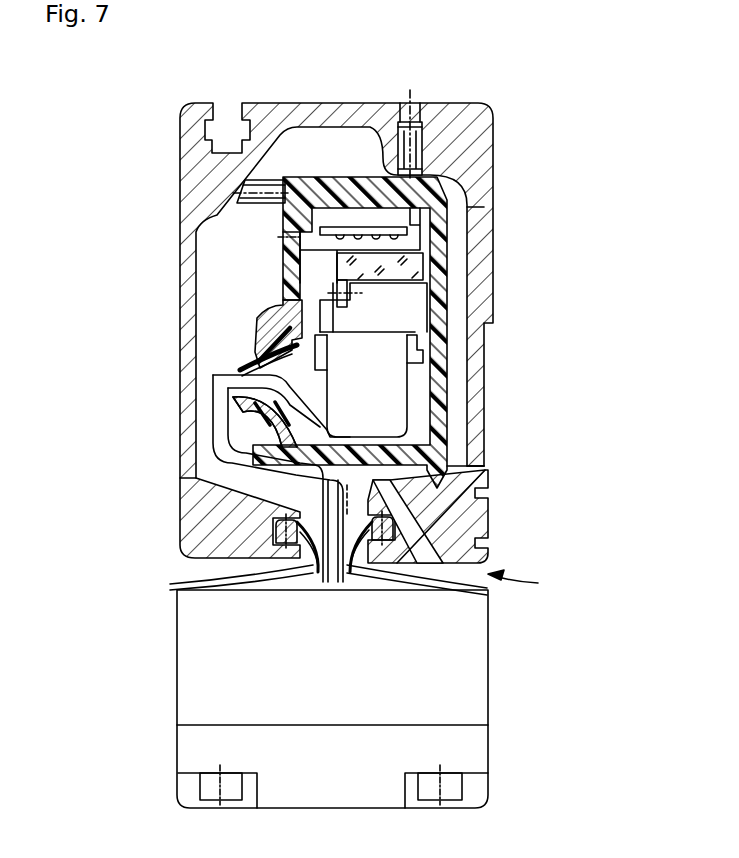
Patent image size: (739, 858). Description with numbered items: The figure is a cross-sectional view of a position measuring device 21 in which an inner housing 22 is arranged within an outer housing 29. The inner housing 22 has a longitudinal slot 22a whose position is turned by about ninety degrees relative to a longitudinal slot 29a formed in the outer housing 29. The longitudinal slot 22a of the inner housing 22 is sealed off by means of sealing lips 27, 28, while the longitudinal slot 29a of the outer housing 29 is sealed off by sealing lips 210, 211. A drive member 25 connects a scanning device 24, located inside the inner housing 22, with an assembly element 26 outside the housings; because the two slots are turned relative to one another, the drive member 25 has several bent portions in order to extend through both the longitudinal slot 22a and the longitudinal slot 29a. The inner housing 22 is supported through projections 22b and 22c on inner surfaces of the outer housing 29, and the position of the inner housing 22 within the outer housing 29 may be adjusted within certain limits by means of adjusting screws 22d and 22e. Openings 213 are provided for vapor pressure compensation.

The position measuring device 21 is at (525, 584).
The inner housing 22 is at (437, 195).
The longitudinal slot 22a is at (255, 352).
The projection 22b is at (467, 208).
The projection 22c is at (470, 460).
The adjusting screw 22d is at (280, 244).
The adjusting screw 22e is at (413, 118).
The scanning device 24 is at (408, 302).
The drive member 25 is at (229, 463).
The assembly element 26 is at (345, 676).
The sealing lip 27 is at (240, 372).
The sealing lip 28 is at (240, 412).
The outer housing 29 is at (478, 482).
The longitudinal slot 29a is at (477, 533).
The sealing lip 210 is at (310, 578).
The sealing lip 211 is at (487, 588).
The opening 213 is at (280, 238).